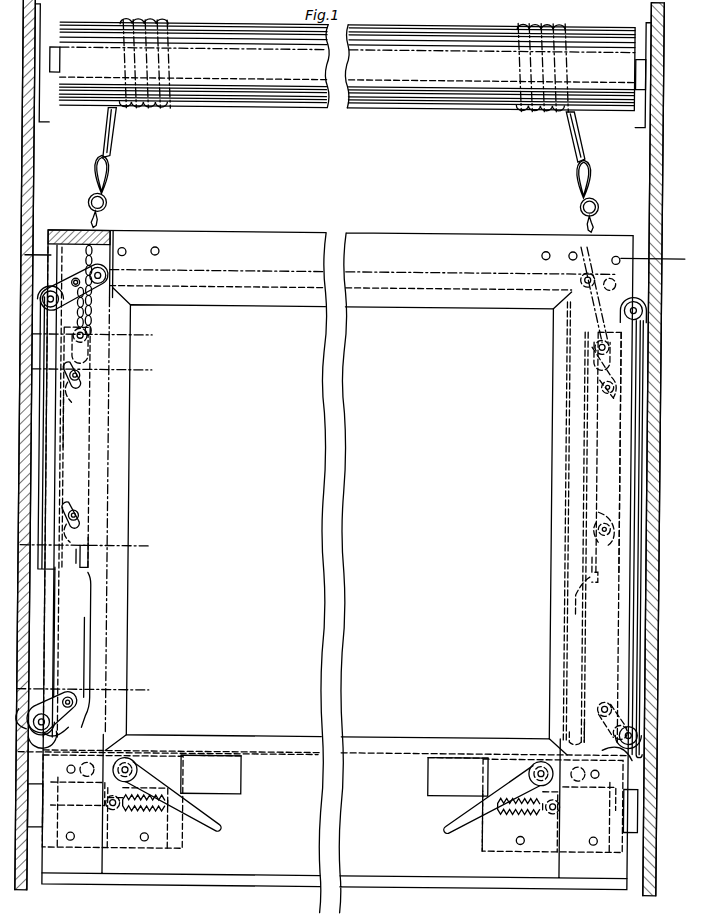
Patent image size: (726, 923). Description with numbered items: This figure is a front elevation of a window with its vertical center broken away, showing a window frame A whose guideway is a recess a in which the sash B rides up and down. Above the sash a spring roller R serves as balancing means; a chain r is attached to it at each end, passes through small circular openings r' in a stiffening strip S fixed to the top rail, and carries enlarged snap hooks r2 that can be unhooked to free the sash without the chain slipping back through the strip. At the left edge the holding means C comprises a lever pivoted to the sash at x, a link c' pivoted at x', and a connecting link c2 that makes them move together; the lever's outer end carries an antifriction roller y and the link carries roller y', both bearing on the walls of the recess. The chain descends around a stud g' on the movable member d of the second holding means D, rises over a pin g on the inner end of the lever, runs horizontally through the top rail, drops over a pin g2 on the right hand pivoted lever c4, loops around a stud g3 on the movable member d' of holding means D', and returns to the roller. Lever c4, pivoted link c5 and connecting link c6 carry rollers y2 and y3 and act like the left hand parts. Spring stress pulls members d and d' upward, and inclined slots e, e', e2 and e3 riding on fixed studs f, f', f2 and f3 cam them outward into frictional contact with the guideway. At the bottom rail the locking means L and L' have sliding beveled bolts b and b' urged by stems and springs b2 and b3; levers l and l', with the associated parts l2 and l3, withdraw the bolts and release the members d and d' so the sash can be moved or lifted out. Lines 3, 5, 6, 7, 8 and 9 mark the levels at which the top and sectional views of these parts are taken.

The window frame A is at (336, 448).
The sash B is at (262, 257).
The spring roller R is at (278, 70).
The chain r is at (354, 135).
The snap hook r2 is at (102, 182).
The circular openings r' is at (354, 223).
The strengthening strip S is at (79, 228).
The holding means C is at (55, 705).
The lever pivot x is at (74, 268).
The link pivot x' is at (76, 690).
The pivoted link c' is at (64, 725).
The connecting link c2 is at (50, 625).
The pivoted lever c4 is at (601, 288).
The pivoted link c5 is at (607, 722).
The connecting link c6 is at (636, 640).
The antifriction roller y is at (42, 296).
The antifriction roller y' is at (32, 728).
The antifriction roller y2 is at (642, 312).
The antifriction roller y3 is at (642, 740).
The pin or stud g is at (118, 289).
The pin or stud g' is at (103, 337).
The pin or stud g2 is at (580, 275).
The pin or stud g3 is at (590, 340).
The inclined slot e is at (73, 367).
The inclined slot e' is at (74, 506).
The inclined slot e2 is at (606, 378).
The inclined slot e3 is at (598, 563).
The pin or stud f is at (69, 397).
The pin or stud f' is at (66, 536).
The pin or stud f2 is at (605, 373).
The pin or stud f3 is at (604, 514).
The movable member d is at (75, 422).
The movable member d' is at (656, 539).
The holding means D is at (63, 491).
The holding means D' is at (601, 537).
The lever l is at (176, 793).
The lever l' is at (490, 796).
The latch rod l2 is at (92, 659).
The locking means part l3 is at (584, 630).
The locking means L is at (137, 818).
The locking means L' is at (528, 832).
The sliding bolt b is at (105, 801).
The sliding bolt b' is at (560, 805).
The stem and spring b2 is at (136, 816).
The stem and spring b3 is at (528, 819).
The recess a is at (636, 752).
The view line 3 is at (347, 253).
The section line 5 is at (83, 335).
The section line 6 is at (83, 370).
The section line 7 is at (79, 552).
The section line 8 is at (77, 690).
The section line 9 is at (162, 754).